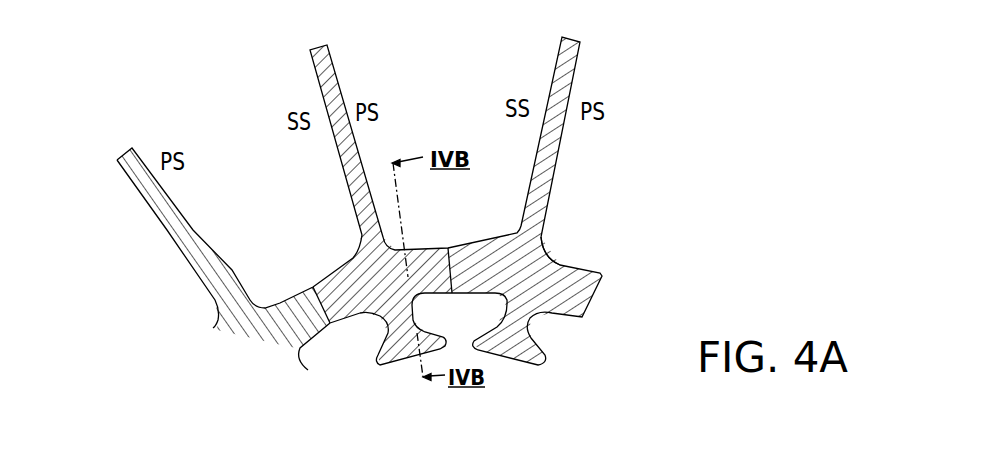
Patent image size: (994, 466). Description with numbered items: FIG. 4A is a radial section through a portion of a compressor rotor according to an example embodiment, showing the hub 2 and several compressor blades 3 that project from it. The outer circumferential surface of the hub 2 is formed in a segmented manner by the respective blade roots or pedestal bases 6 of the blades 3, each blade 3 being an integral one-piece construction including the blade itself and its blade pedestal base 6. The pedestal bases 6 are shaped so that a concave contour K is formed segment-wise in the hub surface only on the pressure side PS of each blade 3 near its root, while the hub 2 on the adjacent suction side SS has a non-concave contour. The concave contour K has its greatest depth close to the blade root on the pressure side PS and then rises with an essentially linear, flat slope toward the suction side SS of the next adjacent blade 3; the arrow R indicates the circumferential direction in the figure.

The hub 2 is at (308, 402).
The blade 3 is at (575, 60).
The blade pedestal base 6 is at (567, 293).
The concave contour K is at (563, 240).
The circumferential direction R is at (506, 397).